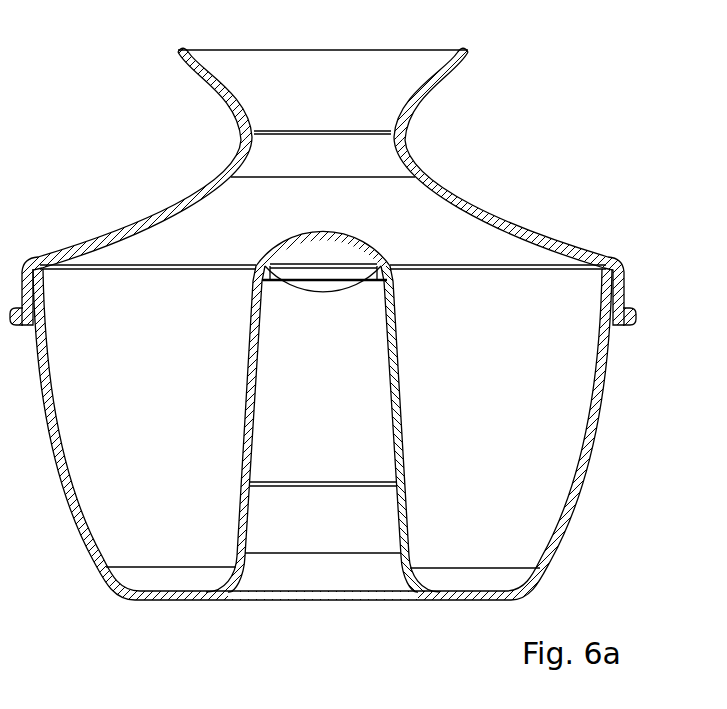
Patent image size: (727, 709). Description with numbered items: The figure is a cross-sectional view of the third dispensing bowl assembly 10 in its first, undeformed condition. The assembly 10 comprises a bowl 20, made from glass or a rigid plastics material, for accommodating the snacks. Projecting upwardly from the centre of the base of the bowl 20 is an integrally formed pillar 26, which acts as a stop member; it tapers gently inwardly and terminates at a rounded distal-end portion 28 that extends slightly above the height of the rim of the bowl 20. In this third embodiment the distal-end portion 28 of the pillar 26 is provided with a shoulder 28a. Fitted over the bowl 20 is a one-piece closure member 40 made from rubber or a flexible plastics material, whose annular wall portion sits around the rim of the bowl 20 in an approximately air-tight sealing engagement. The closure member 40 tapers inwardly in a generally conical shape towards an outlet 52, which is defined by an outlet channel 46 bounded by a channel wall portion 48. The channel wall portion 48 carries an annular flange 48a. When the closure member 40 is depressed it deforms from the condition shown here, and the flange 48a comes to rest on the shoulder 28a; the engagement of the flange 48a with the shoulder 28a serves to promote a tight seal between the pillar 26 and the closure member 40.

The dispensing bowl assembly 10 is at (578, 68).
The bowl 20 is at (606, 383).
The pillar 26 is at (401, 383).
The distal-end portion 28 is at (268, 240).
The shoulder 28a is at (390, 268).
The closure member 40 is at (127, 210).
The outlet channel 46 is at (337, 88).
The channel wall portion 48 is at (415, 99).
The annular flange 48a is at (390, 130).
The outlet 52 is at (272, 66).